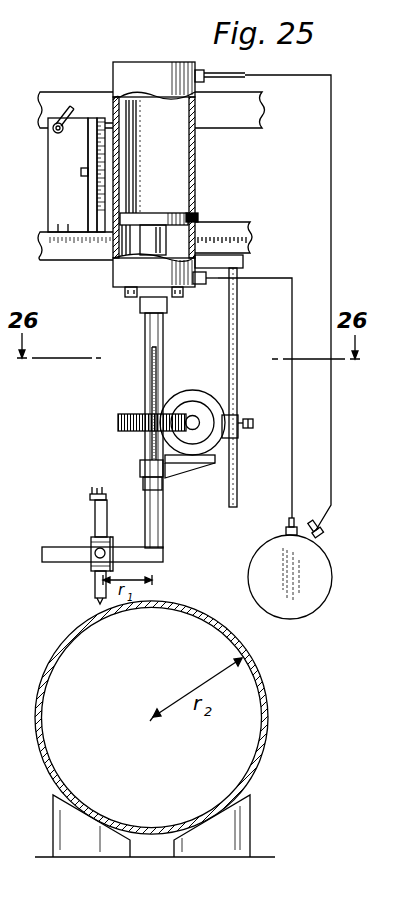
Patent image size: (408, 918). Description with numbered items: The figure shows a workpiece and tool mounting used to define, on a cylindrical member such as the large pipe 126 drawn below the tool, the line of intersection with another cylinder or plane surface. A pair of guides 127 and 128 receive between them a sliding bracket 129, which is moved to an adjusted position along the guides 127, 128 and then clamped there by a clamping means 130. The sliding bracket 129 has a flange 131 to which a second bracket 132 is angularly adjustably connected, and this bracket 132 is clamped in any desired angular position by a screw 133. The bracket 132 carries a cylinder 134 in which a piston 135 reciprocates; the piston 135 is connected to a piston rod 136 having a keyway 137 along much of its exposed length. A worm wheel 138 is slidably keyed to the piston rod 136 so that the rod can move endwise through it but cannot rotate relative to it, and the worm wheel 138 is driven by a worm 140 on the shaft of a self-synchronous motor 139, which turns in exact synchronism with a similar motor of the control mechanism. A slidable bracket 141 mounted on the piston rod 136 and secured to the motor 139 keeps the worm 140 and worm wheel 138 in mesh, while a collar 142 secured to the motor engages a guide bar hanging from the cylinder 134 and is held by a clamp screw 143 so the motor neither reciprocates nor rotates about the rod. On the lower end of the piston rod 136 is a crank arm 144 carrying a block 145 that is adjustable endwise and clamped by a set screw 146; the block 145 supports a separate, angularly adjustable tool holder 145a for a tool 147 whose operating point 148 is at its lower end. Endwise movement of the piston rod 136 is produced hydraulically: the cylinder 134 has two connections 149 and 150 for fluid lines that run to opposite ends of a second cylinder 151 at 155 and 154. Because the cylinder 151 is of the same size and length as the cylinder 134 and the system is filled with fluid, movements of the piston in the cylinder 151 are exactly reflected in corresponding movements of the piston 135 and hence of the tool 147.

The cylindrical workpiece 126 is at (268, 718).
The guide 127 is at (70, 93).
The guide 128 is at (62, 254).
The sliding bracket 129 is at (58, 211).
The clamping means 130 is at (63, 138).
The flange 131 is at (88, 193).
The bracket 132 is at (112, 155).
The screw 133 is at (81, 173).
The cylinder 134 is at (197, 190).
The piston 135 is at (199, 217).
The piston rod 136 is at (164, 356).
The keyway 137 is at (151, 390).
The worm wheel 138 is at (118, 421).
The motor 139 is at (186, 406).
The worm 140 is at (199, 420).
The slidable bracket 141 is at (178, 472).
The collar 142 is at (246, 438).
The clamp screw 143 is at (253, 428).
The crank arm 144 is at (130, 562).
The block 145 is at (92, 542).
The tool holder 145a is at (112, 540).
The set screw 146 is at (96, 556).
The tool 147 is at (95, 512).
The operating point 148 is at (95, 600).
The connection 149 is at (205, 290).
The connection 150 is at (232, 80).
The cylinder 151 is at (300, 612).
The cylinder end connection 154 is at (323, 533).
The cylinder end connection 155 is at (285, 530).